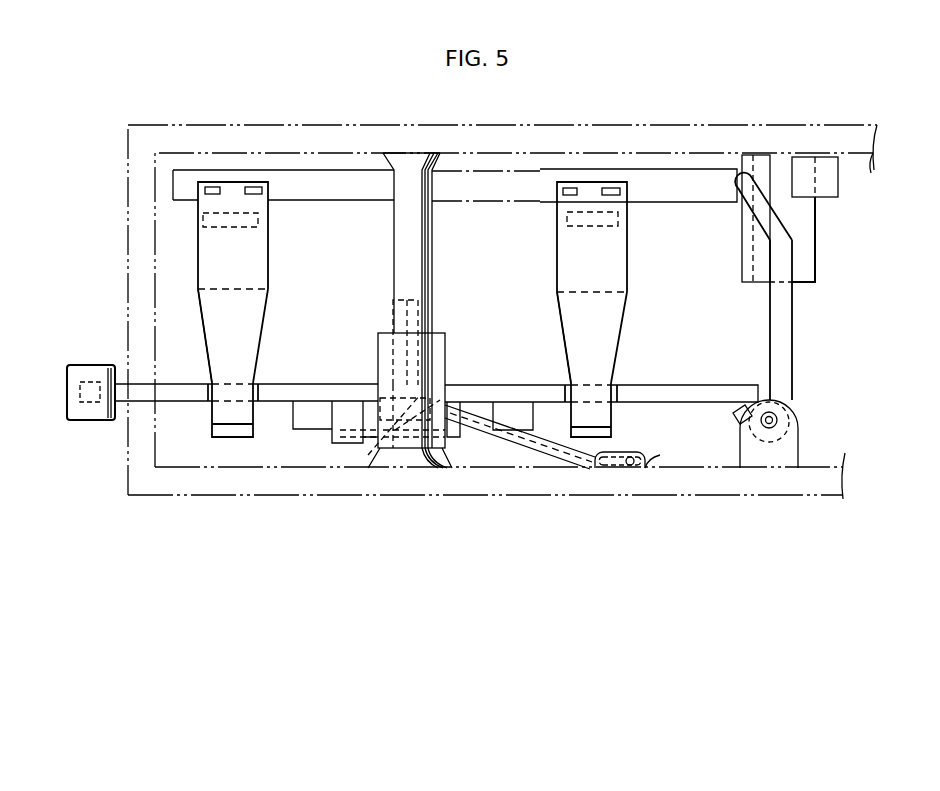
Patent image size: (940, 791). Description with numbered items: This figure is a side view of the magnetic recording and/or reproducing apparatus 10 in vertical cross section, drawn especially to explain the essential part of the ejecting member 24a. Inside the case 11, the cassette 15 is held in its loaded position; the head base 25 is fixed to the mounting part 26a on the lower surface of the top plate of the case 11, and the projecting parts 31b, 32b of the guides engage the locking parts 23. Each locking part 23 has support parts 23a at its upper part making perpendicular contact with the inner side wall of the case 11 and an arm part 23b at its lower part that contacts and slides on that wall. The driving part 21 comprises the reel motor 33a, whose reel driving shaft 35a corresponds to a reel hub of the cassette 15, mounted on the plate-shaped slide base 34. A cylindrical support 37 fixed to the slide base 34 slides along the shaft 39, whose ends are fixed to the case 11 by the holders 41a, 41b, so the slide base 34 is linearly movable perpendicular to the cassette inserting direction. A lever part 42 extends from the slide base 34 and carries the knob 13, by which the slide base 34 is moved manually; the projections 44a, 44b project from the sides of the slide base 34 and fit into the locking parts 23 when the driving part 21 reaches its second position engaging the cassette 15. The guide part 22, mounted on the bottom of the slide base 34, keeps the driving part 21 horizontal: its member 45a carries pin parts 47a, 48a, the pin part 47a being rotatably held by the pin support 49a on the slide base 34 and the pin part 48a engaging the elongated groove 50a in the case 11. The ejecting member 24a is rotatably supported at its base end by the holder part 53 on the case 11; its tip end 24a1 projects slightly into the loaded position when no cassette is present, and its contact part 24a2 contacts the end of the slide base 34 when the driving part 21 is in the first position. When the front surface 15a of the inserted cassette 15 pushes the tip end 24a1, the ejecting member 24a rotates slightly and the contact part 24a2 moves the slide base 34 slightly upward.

The magnetic recording and/or reproducing apparatus 10 is at (203, 109).
The case 11 is at (223, 492).
The knob 13 is at (97, 420).
The cassette 15 is at (537, 128).
The front surface 15a is at (738, 172).
The driving part 21 is at (522, 383).
The guide part 22 is at (550, 458).
The locking part 23 is at (272, 279).
The support parts 23a is at (255, 185).
The arm part 23b is at (210, 331).
The ejecting member 24a is at (793, 336).
The tip end 24a1 is at (762, 195).
The contact part 24a2 is at (735, 415).
The head base 25 is at (817, 235).
The mounting part 26a is at (838, 190).
The projecting part 31b is at (262, 221).
The projecting part 32b is at (620, 221).
The reel motor 33a is at (293, 420).
The slide base 34 is at (320, 383).
The reel driving shaft 35a is at (425, 312).
The support 37 is at (376, 340).
The shaft 39 is at (432, 262).
The holder 41a is at (410, 153).
The holder 41b is at (413, 463).
The lever part 42 is at (95, 380).
The projection 44a is at (613, 385).
The projection 44b is at (258, 383).
The member 45a is at (517, 440).
The pin part 47a is at (445, 380).
The pin part 48a is at (630, 467).
The pin support 49a is at (368, 468).
The groove 50a is at (660, 468).
The holder part 53 is at (765, 462).